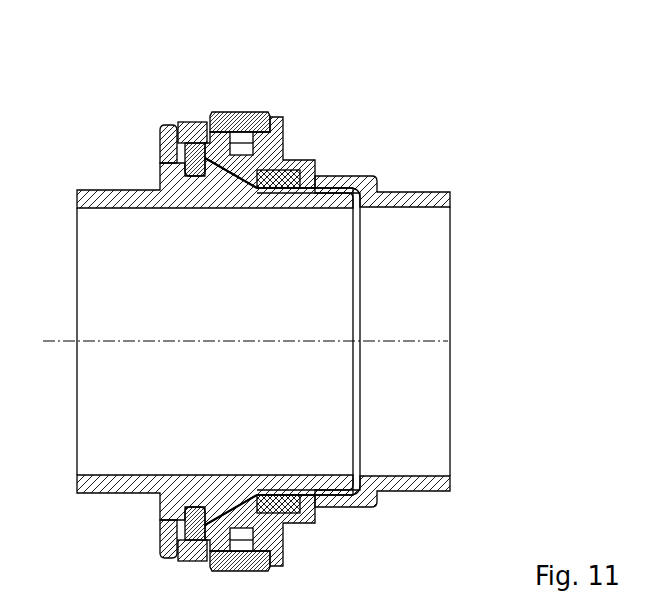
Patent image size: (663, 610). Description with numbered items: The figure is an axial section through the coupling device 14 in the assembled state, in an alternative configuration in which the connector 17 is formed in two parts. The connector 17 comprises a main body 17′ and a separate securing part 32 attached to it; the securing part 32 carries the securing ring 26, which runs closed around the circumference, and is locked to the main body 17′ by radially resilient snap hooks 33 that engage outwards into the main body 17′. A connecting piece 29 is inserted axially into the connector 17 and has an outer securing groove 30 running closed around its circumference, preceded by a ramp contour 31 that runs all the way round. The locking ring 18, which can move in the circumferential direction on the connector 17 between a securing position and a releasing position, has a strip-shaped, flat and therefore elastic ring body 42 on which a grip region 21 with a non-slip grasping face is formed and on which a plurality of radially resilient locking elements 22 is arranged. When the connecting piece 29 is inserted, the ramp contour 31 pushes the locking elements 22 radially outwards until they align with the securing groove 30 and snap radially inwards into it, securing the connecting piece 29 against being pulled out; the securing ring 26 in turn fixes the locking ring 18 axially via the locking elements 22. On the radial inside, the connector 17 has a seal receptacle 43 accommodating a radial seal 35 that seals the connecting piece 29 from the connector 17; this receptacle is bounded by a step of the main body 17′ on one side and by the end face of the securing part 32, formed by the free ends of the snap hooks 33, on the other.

The coupling device 14 is at (332, 292).
The connector 17 is at (409, 299).
The main body 17′ is at (419, 181).
The locking ring 18 is at (256, 293).
The grip region 21 is at (237, 307).
The locking elements 22 is at (185, 515).
The securing ring 26 is at (160, 130).
The connecting piece 29 is at (201, 273).
The securing groove 30 is at (188, 142).
The ramp contour 31 is at (262, 158).
The securing part 32 is at (163, 107).
The snap hooks 33 is at (257, 189).
The radial seal 35 is at (290, 495).
The ring body 42 is at (215, 110).
The seal receptacle 43 is at (291, 187).